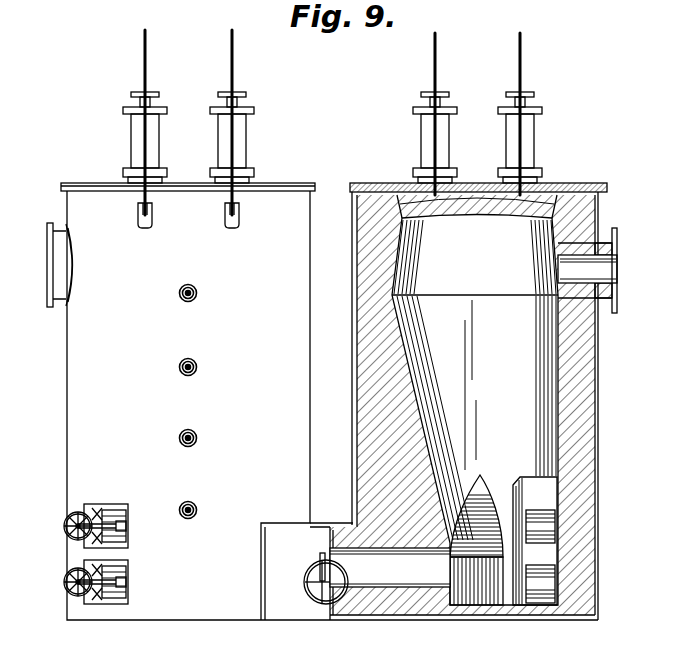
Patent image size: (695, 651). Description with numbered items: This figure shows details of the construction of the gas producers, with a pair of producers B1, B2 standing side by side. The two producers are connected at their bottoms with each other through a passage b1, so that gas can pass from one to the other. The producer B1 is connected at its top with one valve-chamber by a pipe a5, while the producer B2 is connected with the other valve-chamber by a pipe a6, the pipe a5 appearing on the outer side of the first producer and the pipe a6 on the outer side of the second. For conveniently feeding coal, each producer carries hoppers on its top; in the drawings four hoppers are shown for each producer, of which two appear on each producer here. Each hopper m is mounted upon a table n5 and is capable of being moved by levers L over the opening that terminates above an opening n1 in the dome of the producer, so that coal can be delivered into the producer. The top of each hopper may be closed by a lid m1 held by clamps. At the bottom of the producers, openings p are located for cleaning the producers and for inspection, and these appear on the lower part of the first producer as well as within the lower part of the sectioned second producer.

The lever L is at (143, 50).
The hopper m is at (131, 127).
The lid m1 is at (168, 112).
The table n5 is at (551, 174).
The pipe a5 is at (47, 262).
The producer B1 is at (207, 401).
The producer B2 is at (468, 401).
The opening in the dome of the producer n1 is at (460, 232).
The pipe a6 is at (619, 268).
The opening p is at (130, 530).
The passage b1 is at (377, 576).